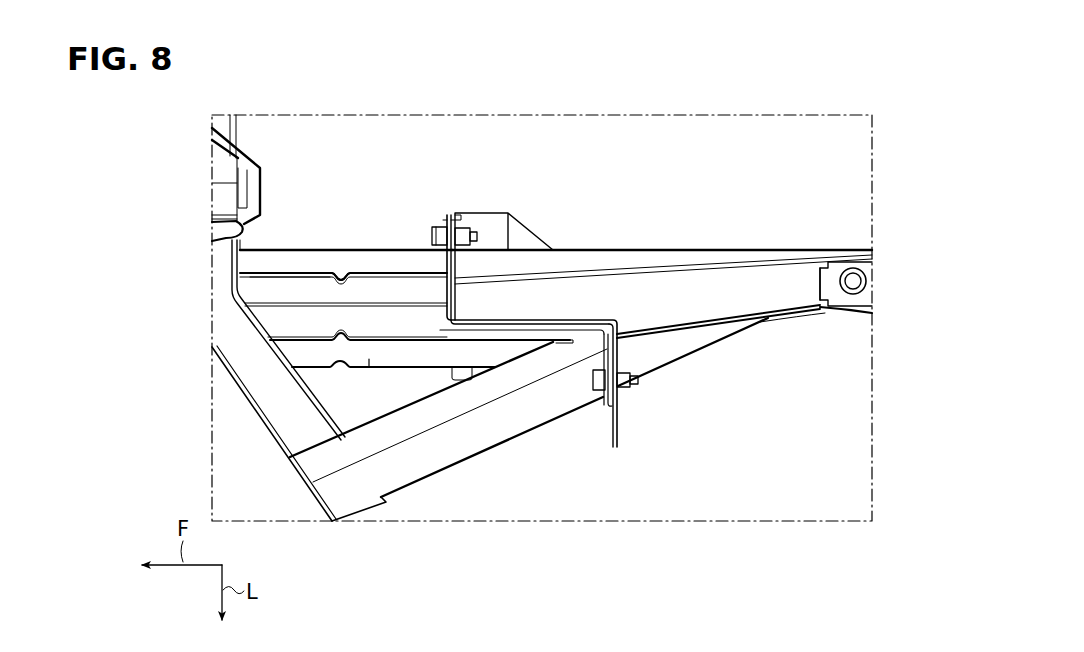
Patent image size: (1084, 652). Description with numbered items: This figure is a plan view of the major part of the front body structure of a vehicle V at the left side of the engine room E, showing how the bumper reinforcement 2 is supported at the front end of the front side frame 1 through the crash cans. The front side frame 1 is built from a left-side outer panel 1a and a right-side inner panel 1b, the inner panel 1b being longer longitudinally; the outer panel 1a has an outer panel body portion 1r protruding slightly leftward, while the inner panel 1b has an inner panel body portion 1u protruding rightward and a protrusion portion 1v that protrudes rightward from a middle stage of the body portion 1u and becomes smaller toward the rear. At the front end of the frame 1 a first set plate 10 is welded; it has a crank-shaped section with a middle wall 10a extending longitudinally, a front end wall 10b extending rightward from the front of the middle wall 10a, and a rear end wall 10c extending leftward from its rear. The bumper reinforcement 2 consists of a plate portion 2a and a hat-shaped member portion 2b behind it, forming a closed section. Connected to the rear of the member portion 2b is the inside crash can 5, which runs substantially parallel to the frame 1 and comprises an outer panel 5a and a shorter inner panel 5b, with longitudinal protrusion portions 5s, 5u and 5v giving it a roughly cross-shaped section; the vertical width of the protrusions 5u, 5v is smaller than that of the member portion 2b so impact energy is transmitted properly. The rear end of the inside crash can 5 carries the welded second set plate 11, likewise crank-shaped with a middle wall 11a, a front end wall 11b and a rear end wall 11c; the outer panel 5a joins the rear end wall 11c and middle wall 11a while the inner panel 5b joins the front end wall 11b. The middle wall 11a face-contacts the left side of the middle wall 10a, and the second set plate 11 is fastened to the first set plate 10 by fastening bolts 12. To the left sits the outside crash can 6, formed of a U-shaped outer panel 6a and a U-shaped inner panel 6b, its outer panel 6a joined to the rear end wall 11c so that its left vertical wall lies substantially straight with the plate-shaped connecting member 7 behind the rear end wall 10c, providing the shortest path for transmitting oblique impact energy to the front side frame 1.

The front side frame 1 is at (764, 216).
The outer panel 1a is at (804, 319).
The inner panel 1b is at (794, 247).
The outer panel body portion 1r is at (751, 322).
The inner panel body portion 1u is at (705, 278).
The protrusion portion 1v is at (690, 249).
The bumper reinforcement 2 is at (221, 320).
The plate portion 2a is at (248, 405).
The member portion 2b is at (237, 130).
The inside crash can 5 is at (327, 237).
The outer panel 5a is at (333, 375).
The inner panel 5b is at (282, 245).
The protrusion portion 5s is at (358, 303).
The protrusion portion 5u is at (370, 368).
The protrusion portion 5v is at (313, 263).
The outside crash can 6 is at (439, 471).
The outer panel 6a is at (478, 432).
The inner panel 6b is at (428, 415).
The connecting member 7 is at (661, 366).
The first set plate 10 is at (600, 317).
The middle wall 10a is at (561, 320).
The front end wall 10b is at (457, 262).
The rear end wall 10c is at (620, 418).
The second set plate 11 is at (540, 334).
The middle wall 11a is at (506, 332).
The front end wall 11b is at (440, 270).
The rear end wall 11c is at (605, 406).
The fastening bolt 12 is at (436, 227).
The vehicle V is at (621, 132).
The engine room E is at (611, 183).